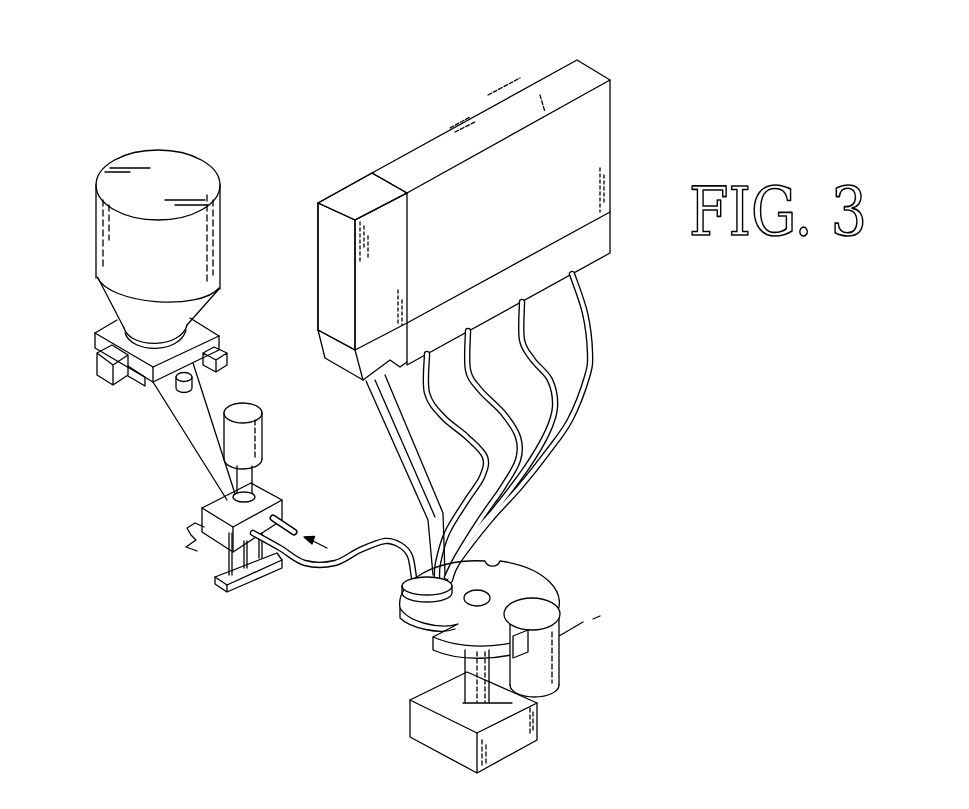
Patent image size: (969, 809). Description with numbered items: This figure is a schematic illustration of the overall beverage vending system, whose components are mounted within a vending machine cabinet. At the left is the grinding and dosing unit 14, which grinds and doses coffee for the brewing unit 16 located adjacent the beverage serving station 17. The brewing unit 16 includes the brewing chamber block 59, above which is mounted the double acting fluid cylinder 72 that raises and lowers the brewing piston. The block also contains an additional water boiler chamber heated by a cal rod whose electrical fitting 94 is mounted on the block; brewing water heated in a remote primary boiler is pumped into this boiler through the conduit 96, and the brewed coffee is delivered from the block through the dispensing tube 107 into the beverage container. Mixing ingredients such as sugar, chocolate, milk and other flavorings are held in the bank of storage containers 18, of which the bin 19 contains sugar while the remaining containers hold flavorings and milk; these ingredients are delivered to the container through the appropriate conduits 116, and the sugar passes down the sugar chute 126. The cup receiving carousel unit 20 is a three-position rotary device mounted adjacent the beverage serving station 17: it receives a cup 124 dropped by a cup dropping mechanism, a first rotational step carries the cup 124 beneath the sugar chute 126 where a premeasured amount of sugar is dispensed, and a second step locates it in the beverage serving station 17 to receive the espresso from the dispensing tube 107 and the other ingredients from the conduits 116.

The grinding and dosing unit 14 is at (91, 401).
The brewing unit 16 is at (178, 572).
The beverage serving station 17 is at (381, 745).
The bank of storage containers 18 is at (410, 108).
The bin 19 is at (356, 180).
The cup receiving carousel unit 20 is at (520, 573).
The brewing chamber block 59 is at (273, 490).
The double acting fluid cylinder 72 is at (262, 440).
The electrical fitting 94 is at (205, 526).
The conduit 96 is at (296, 523).
The dispensing tube 107 is at (362, 560).
The conduits 116 is at (423, 380).
The cup 124 is at (552, 678).
The sugar chute 126 is at (415, 435).